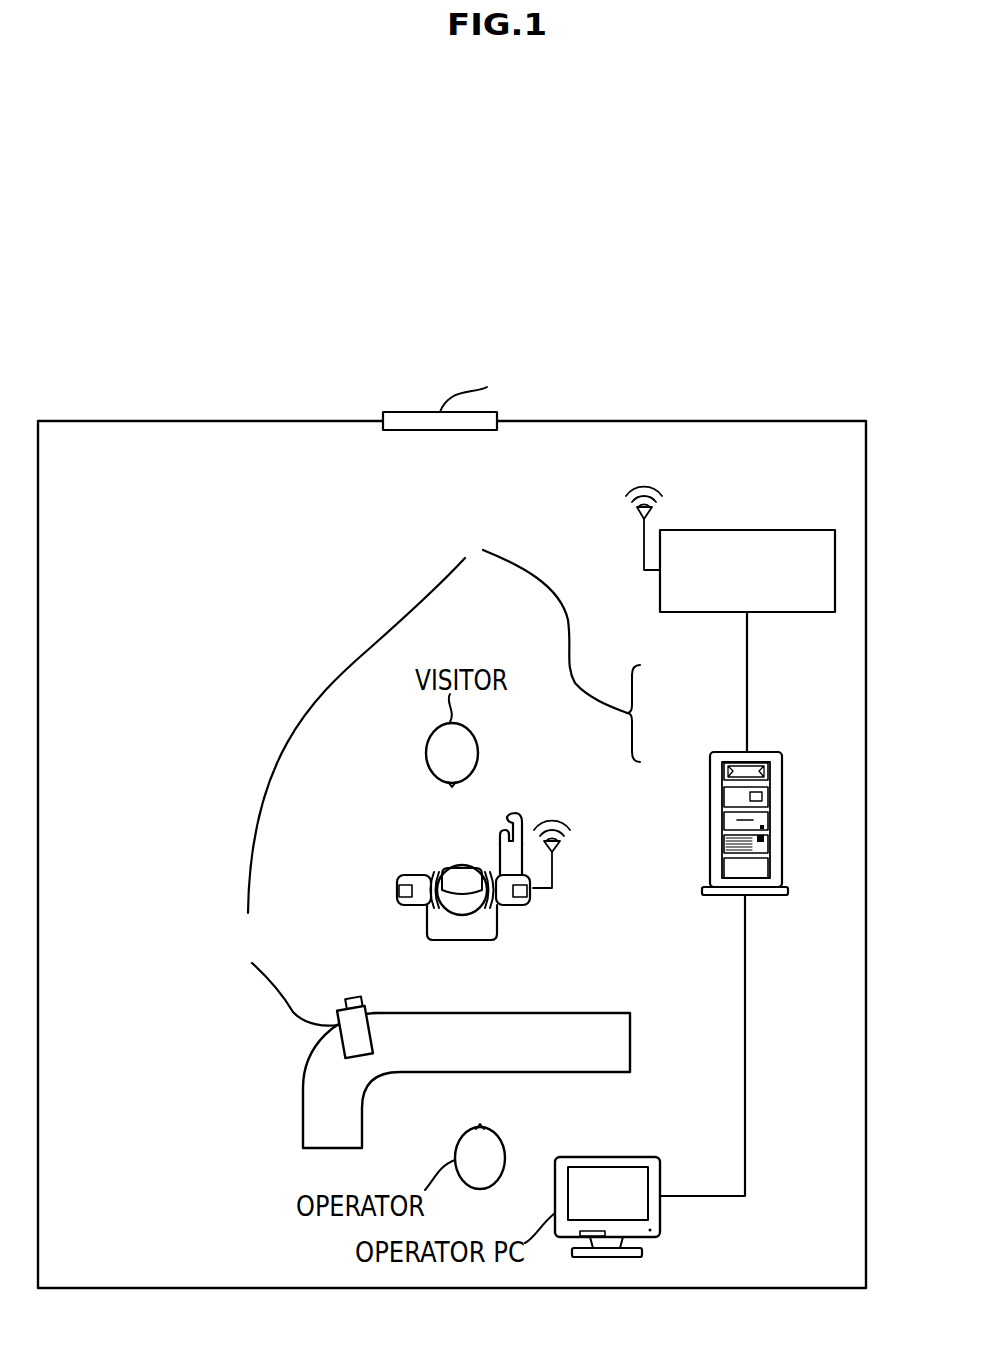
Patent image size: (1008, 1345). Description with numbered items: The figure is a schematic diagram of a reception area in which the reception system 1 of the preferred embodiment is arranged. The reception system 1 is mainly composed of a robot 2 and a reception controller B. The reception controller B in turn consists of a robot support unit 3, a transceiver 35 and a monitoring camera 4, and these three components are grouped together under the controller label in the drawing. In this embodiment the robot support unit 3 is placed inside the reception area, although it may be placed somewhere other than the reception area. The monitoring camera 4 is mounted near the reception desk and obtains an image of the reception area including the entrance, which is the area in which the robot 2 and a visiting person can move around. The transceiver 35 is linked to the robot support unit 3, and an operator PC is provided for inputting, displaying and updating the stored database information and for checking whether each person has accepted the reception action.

The reception system 1 is at (636, 404).
The robot 2 is at (468, 942).
The robot support unit 3 is at (710, 800).
The transceiver 35 is at (700, 613).
The monitoring camera 4 is at (307, 990).
The reception controller B is at (437, 776).